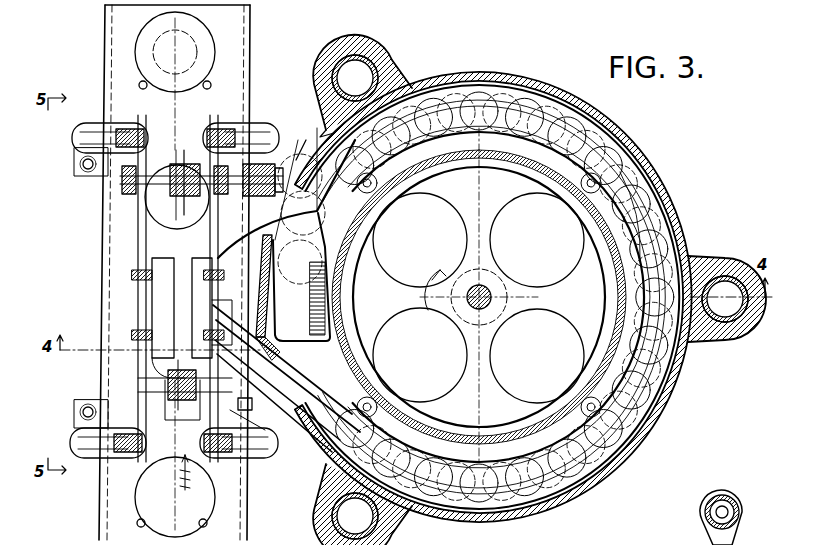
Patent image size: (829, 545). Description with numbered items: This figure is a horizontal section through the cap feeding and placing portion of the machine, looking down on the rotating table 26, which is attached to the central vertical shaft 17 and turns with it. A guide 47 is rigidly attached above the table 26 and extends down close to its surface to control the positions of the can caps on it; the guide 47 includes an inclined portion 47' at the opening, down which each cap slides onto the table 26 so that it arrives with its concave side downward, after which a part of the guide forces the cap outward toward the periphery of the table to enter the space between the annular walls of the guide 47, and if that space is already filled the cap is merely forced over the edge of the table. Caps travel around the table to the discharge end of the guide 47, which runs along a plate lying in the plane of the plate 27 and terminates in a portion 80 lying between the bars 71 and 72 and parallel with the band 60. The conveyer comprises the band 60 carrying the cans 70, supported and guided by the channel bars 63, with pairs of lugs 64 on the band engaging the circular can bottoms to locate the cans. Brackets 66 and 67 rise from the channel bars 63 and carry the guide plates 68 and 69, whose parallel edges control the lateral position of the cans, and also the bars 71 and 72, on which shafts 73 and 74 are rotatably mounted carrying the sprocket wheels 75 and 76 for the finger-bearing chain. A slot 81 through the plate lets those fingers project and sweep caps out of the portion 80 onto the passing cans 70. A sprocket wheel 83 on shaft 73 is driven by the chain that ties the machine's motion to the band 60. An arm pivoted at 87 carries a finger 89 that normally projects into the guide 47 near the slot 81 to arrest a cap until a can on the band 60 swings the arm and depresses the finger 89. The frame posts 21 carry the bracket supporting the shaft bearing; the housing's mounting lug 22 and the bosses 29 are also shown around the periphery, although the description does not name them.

The vertical shaft 17 is at (483, 292).
The posts 21 is at (395, 72).
The mounting lug 22 is at (714, 340).
The table 26 is at (565, 295).
The plate 27 is at (640, 190).
The mounting boss 29 is at (380, 58).
The guide 47 is at (505, 278).
The inclined portion 47' is at (289, 170).
The band 60 is at (128, 75).
The channel bars 63 is at (105, 48).
The lugs 64 is at (205, 88).
The bracket 66 is at (95, 141).
The bracket 67 is at (92, 456).
The guide plate 68 is at (86, 271).
The guide plate 69 is at (230, 230).
The cans 70 is at (138, 33).
The bar 71 is at (138, 203).
The bar 72 is at (207, 207).
The shaft 73 is at (133, 183).
The shaft 74 is at (140, 383).
The sprocket wheel 75 is at (178, 178).
The sprocket wheel 76 is at (172, 402).
The portion of the guide 80 is at (192, 292).
The slot 81 is at (177, 277).
The sprocket wheel 83 is at (305, 158).
The pivot 87 is at (215, 395).
The finger 89 is at (248, 425).